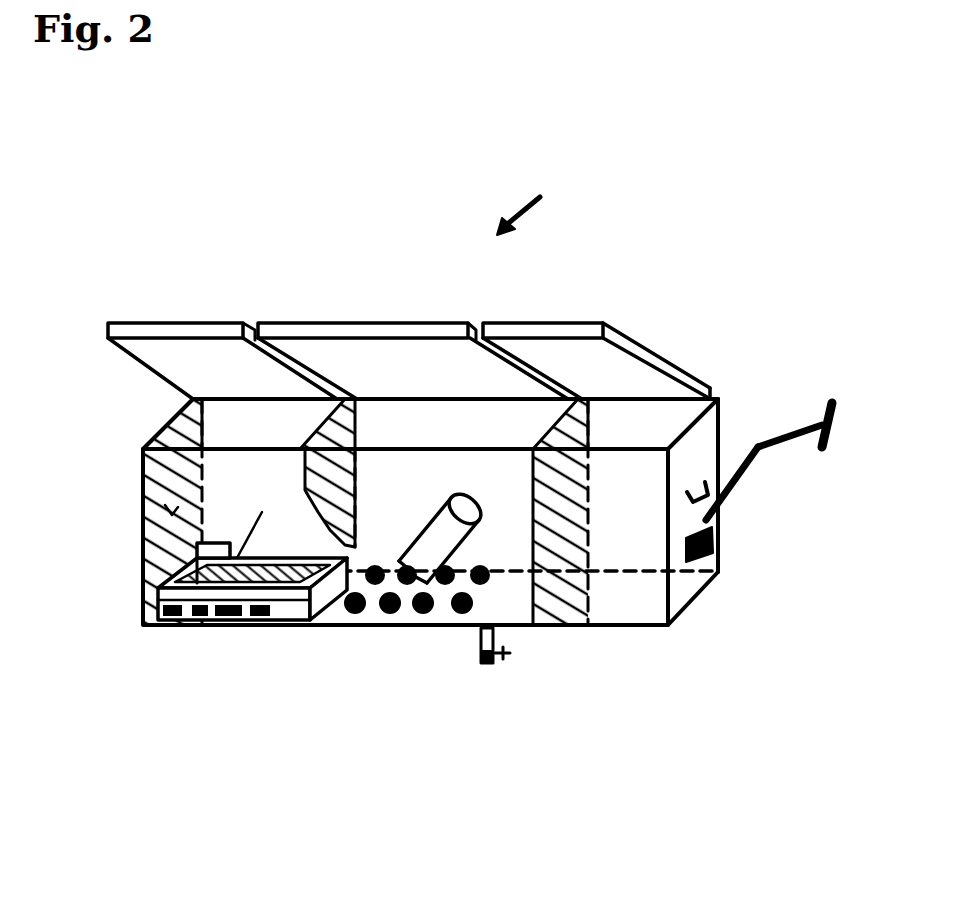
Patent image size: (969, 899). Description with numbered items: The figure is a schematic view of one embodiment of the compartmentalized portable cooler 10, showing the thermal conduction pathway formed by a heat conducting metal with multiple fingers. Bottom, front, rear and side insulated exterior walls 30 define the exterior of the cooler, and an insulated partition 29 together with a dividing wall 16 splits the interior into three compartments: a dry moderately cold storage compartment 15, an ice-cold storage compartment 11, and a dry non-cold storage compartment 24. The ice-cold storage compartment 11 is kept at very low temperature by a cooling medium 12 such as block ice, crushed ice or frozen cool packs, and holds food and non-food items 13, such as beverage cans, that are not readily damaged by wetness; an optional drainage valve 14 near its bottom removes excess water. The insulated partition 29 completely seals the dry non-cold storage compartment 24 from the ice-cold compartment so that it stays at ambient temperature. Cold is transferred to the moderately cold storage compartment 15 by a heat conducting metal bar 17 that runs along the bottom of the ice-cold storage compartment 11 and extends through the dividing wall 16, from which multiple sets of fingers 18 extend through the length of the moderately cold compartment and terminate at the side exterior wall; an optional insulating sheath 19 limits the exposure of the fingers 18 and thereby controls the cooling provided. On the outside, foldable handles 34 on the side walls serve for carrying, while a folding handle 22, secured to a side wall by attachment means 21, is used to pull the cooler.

The portable cooler 10 is at (413, 398).
The ice-cold storage compartment 11 is at (407, 513).
The cooling medium 12 is at (462, 603).
The food and non-food items 13 is at (425, 550).
The drainage valve 14 is at (480, 656).
The dry moderately cold storage compartment 15 is at (237, 558).
The dividing wall 16 is at (338, 490).
The heat conducting metal bar 17 is at (302, 615).
The multiple sets of fingers 18 is at (262, 597).
The insulating sheath 19 is at (150, 576).
The attachment means 21 is at (713, 547).
The folding handle 22 is at (775, 435).
The dry non-cold storage compartment 24 is at (620, 525).
The insulated partition 29 is at (552, 532).
The insulated exterior walls 30 is at (143, 493).
The foldable handles 34 is at (711, 478).